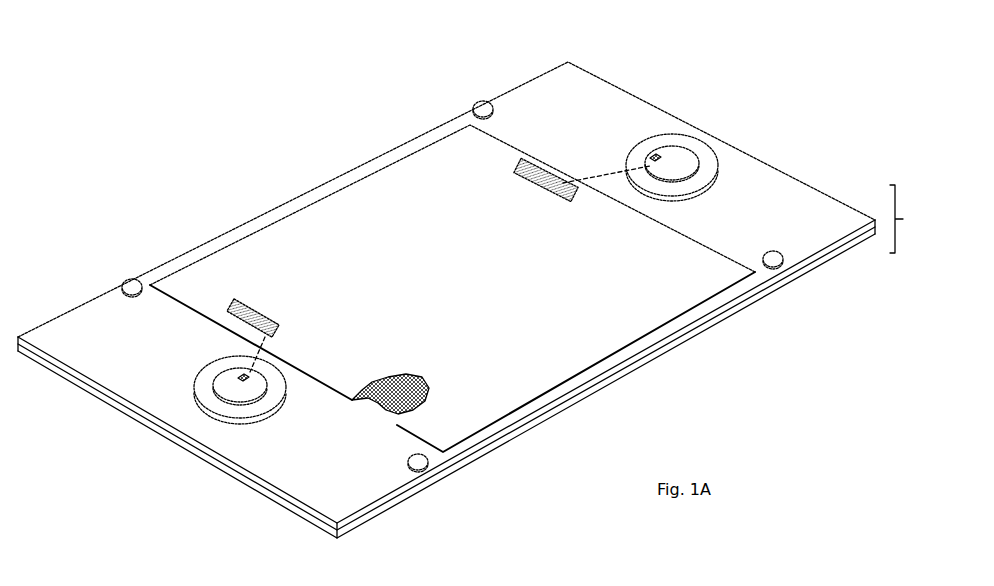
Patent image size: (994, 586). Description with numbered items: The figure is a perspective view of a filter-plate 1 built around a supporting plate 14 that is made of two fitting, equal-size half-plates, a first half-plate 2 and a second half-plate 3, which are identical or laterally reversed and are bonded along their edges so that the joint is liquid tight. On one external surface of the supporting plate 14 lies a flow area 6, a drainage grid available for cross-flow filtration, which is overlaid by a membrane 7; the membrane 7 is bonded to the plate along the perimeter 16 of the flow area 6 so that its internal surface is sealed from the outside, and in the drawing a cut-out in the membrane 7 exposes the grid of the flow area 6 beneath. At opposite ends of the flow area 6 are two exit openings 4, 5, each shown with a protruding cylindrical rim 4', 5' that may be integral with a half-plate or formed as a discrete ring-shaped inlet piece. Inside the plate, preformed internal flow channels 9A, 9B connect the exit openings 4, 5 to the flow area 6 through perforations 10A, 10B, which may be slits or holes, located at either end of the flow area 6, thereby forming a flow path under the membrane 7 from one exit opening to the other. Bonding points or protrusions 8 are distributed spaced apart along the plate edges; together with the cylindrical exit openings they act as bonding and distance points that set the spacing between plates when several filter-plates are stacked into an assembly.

The filter-plate 1 is at (792, 163).
The first half-plate 2 is at (862, 215).
The second half-plate 3 is at (854, 242).
The supporting plate 14 is at (912, 219).
The exit opening 4 is at (656, 136).
The cylindrical rim 4' is at (750, 167).
The exit opening 5 is at (188, 404).
The cylindrical rim 5' is at (213, 420).
The flow area 6 is at (433, 397).
The membrane 7 is at (505, 390).
The bonding points 8 is at (461, 286).
The internal flow channel 9A is at (240, 343).
The internal flow channel 9B is at (612, 177).
The perforations 10A is at (248, 307).
The perforations 10B is at (535, 162).
The perimeter 16 is at (378, 383).